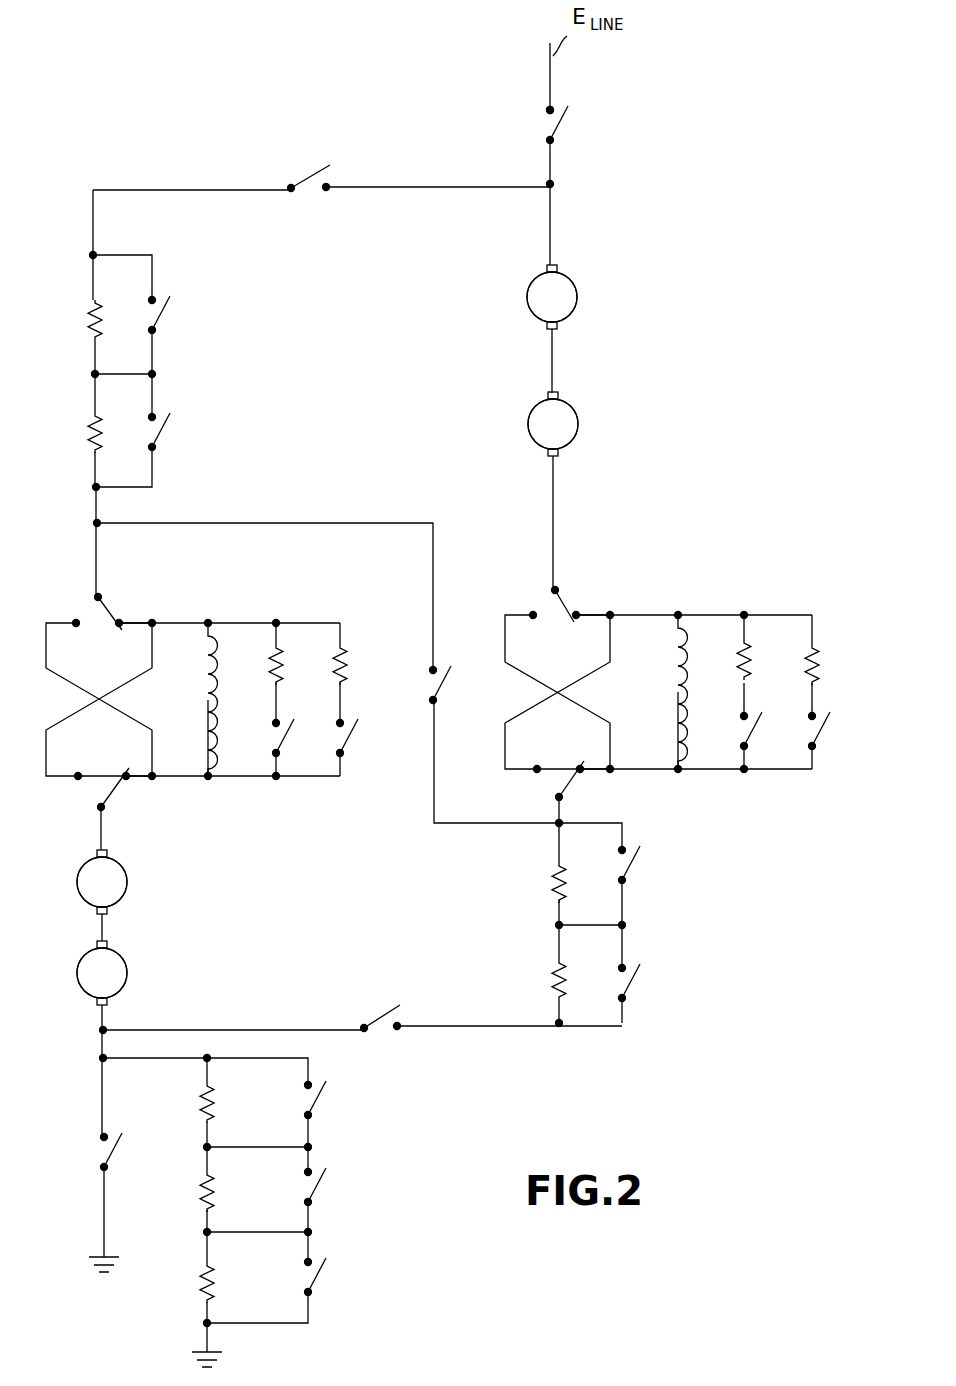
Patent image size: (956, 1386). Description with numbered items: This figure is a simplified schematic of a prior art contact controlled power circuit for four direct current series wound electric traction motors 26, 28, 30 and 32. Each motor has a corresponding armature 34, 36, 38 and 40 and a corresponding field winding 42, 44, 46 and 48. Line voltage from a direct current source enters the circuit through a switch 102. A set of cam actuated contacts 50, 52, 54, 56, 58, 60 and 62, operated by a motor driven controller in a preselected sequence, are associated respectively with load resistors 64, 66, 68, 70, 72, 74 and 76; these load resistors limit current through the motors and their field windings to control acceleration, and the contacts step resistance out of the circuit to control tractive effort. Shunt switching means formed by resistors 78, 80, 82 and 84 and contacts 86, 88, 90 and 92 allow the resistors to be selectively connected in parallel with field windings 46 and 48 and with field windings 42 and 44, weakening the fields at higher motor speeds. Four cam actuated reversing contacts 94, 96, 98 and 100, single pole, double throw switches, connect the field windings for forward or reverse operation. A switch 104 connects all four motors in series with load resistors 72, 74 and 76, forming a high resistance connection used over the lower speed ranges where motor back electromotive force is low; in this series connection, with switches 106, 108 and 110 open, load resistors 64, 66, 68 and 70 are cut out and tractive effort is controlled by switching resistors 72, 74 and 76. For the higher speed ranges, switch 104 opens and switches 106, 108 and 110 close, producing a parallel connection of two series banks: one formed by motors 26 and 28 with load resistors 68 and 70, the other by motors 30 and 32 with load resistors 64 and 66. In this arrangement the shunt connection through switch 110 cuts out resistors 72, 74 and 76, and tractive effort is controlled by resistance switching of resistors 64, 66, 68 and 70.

The traction motor 26 is at (517, 297).
The traction motor 28 is at (518, 424).
The traction motor 30 is at (134, 882).
The traction motor 32 is at (134, 973).
The armature 34 is at (578, 302).
The armature 36 is at (580, 428).
The armature 38 is at (76, 882).
The armature 40 is at (74, 976).
The field winding 42 is at (670, 668).
The field winding 44 is at (670, 741).
The field winding 46 is at (204, 670).
The field winding 48 is at (204, 746).
The contacts 50 is at (174, 318).
The contacts 52 is at (174, 434).
The contacts 54 is at (636, 870).
The contacts 56 is at (636, 988).
The contacts 58 is at (328, 1096).
The contacts 60 is at (328, 1176).
The contacts 62 is at (328, 1270).
The load resistor 64 is at (87, 312).
The load resistor 66 is at (87, 436).
The load resistor 68 is at (553, 882).
The load resistor 70 is at (553, 978).
The load resistor 72 is at (206, 1098).
The load resistor 74 is at (202, 1188).
The load resistor 76 is at (202, 1280).
The shunt resistor 78 is at (268, 666).
The shunt resistor 80 is at (344, 674).
The shunt resistor 82 is at (738, 666).
The shunt resistor 84 is at (816, 668).
The shunt contacts 86 is at (270, 740).
The shunt contacts 88 is at (356, 738).
The shunt contacts 90 is at (740, 735).
The shunt contacts 92 is at (826, 732).
The reversing contact 94 is at (546, 608).
The reversing contact 96 is at (548, 788).
The reversing contact 98 is at (88, 612).
The reversing contact 100 is at (88, 796).
The switch 102 is at (570, 131).
The switch 104 is at (432, 686).
The switch 106 is at (308, 172).
The switch 108 is at (375, 1017).
The switch 110 is at (98, 1152).